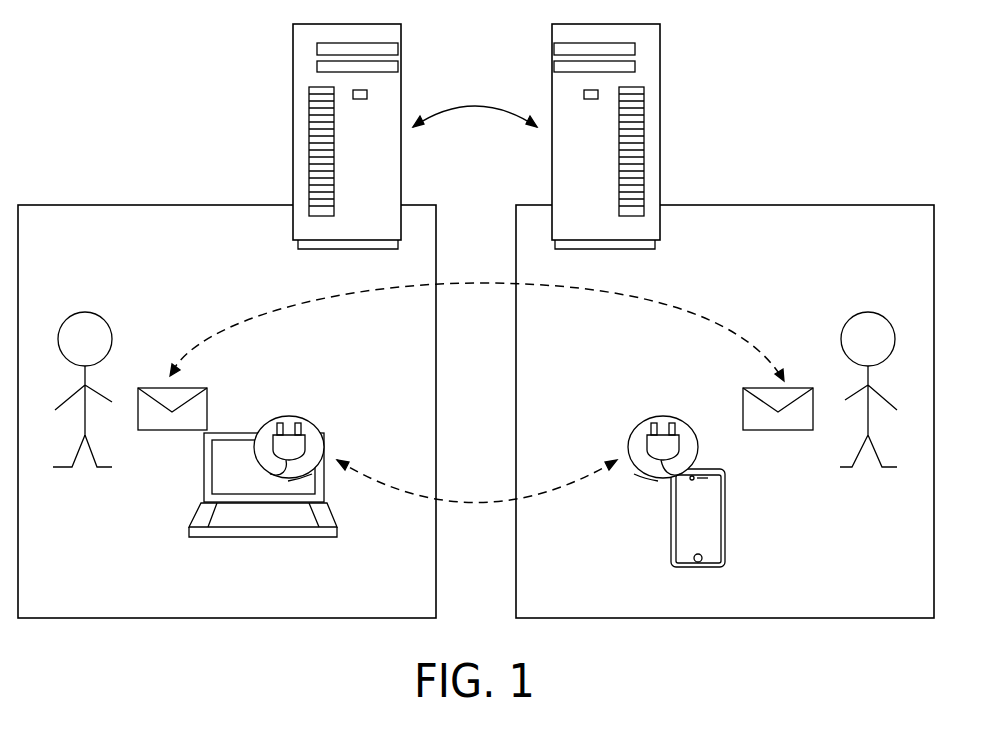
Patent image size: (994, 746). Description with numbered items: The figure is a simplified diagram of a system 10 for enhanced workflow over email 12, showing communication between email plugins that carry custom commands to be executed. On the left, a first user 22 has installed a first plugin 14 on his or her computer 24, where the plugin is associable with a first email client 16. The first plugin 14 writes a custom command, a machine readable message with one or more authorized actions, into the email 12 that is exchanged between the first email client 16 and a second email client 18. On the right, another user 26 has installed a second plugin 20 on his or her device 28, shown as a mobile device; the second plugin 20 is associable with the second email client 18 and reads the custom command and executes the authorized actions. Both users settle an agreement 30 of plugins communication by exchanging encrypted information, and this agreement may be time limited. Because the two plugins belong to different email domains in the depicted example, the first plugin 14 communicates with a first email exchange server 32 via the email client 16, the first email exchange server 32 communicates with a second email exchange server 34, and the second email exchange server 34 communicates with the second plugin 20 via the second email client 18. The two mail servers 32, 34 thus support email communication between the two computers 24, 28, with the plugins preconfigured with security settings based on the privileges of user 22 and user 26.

The system 10 is at (128, 642).
The email 12 is at (688, 307).
The first plugin 14 is at (318, 427).
The first email client 16 is at (223, 472).
The second email client 18 is at (717, 497).
The second plugin 20 is at (633, 427).
The user 22 is at (82, 312).
The computer 24 is at (203, 541).
The user 26 is at (870, 312).
The device 28 is at (667, 540).
The agreement 30 is at (470, 500).
The first email exchange server 32 is at (291, 65).
The second email exchange server 34 is at (661, 52).